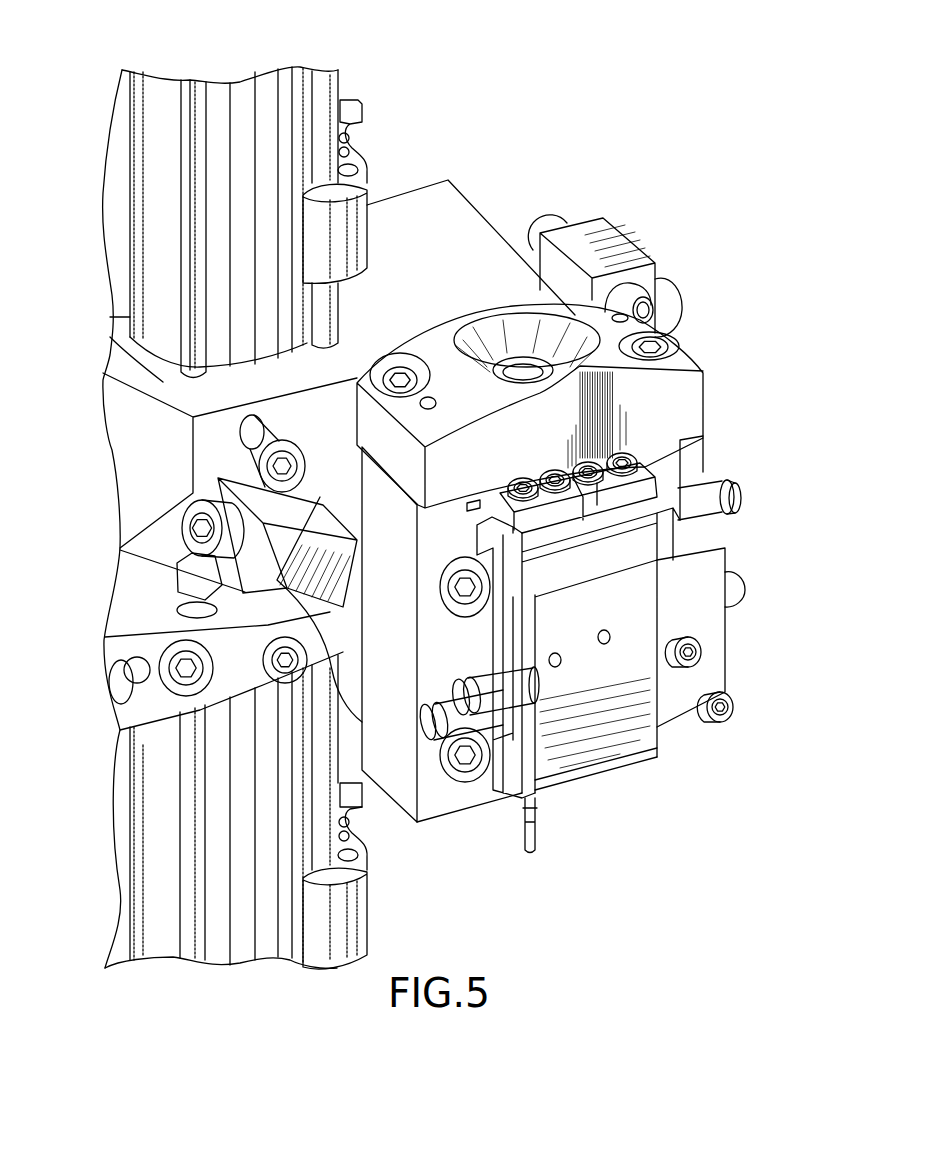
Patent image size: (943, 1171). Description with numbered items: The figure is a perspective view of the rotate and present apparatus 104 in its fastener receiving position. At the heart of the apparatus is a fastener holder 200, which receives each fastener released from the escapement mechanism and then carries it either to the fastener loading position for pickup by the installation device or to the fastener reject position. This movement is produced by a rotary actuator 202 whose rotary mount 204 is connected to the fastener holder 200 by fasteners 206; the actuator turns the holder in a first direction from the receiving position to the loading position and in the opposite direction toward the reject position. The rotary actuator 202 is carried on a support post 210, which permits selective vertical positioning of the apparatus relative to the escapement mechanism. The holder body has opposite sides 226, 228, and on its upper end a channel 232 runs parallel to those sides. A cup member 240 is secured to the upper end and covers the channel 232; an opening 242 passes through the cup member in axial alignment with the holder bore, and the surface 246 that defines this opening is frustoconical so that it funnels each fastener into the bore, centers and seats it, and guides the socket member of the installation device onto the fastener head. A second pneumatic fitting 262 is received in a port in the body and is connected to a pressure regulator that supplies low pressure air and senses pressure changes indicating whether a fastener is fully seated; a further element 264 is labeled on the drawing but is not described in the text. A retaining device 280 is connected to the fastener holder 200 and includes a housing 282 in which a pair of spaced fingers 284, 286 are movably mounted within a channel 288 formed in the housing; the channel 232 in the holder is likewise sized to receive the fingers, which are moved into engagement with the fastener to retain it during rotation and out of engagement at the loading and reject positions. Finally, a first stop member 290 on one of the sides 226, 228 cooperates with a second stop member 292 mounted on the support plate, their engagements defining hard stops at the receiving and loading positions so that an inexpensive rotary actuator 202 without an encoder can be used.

The rotate and present apparatus 104 is at (790, 430).
The fastener holder 200 is at (447, 840).
The rotary actuator 202 is at (452, 222).
The rotary mount 204 is at (350, 672).
The fasteners 206 is at (458, 581).
The support post 210 is at (155, 160).
The side 226 is at (682, 737).
The side 228 is at (400, 787).
The channel 232 is at (476, 502).
The cup member 240 is at (437, 340).
The opening 242 is at (497, 330).
The surface 246 is at (528, 327).
The second pneumatic fitting 262 is at (705, 483).
The knob 264 is at (742, 588).
The retaining device 280 is at (661, 450).
The housing 282 is at (630, 745).
The finger 284 is at (495, 498).
The finger 286 is at (612, 476).
The channel 288 is at (522, 573).
The first stop member 290 is at (253, 492).
The second stop member 292 is at (117, 610).